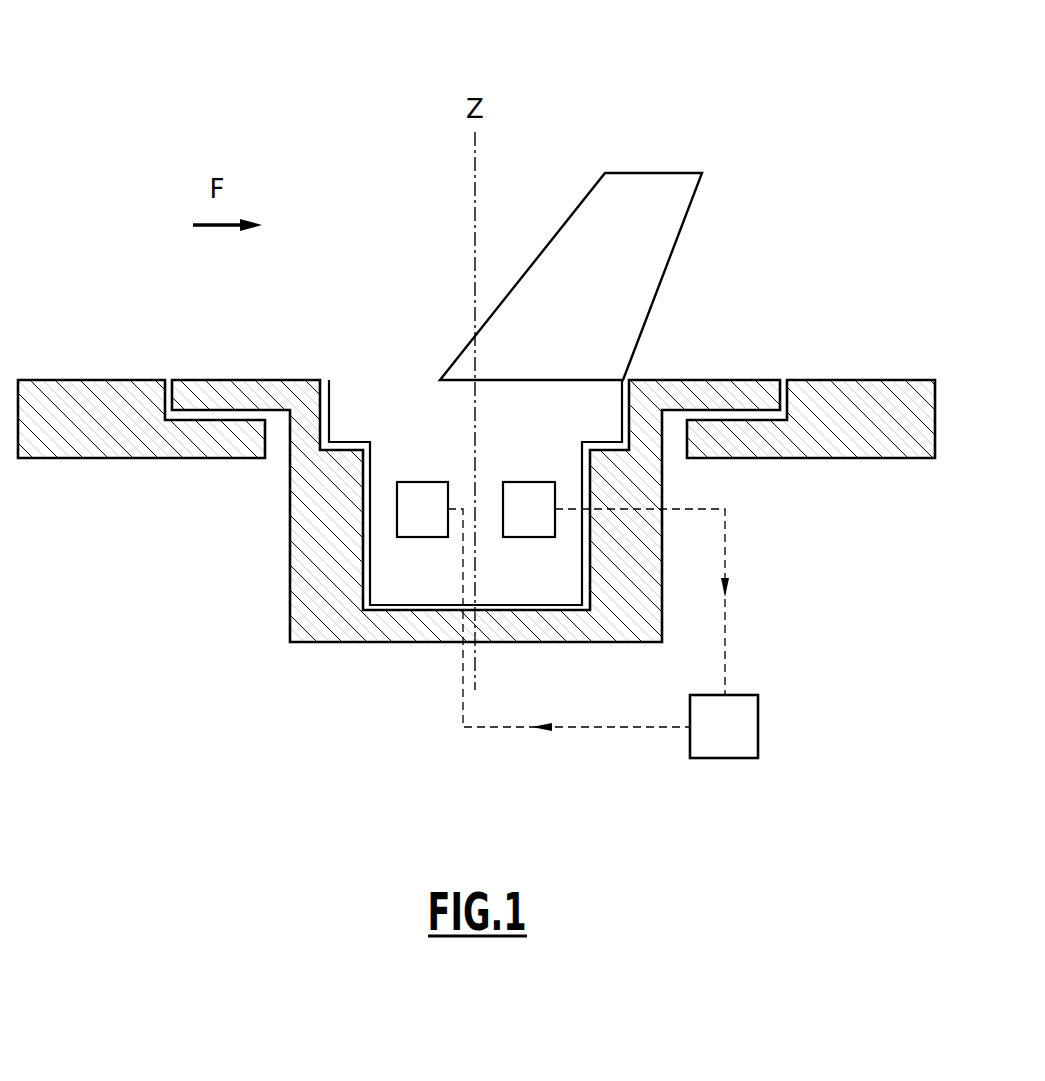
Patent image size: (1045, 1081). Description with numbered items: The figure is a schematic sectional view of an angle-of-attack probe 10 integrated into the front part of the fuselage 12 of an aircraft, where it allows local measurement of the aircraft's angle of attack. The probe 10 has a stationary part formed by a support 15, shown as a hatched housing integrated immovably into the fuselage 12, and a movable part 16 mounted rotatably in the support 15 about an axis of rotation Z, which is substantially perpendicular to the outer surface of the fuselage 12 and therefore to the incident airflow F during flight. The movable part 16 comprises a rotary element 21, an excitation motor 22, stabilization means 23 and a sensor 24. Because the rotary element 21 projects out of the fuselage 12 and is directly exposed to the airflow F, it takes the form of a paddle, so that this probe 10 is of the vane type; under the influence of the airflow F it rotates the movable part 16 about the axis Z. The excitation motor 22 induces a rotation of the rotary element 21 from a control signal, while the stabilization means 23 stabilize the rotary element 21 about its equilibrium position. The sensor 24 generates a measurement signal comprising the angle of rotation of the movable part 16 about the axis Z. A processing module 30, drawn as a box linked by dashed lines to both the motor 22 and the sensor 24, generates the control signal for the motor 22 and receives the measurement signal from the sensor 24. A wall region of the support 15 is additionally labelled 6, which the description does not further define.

The angle-of-attack probe 10 is at (820, 112).
The fuselage 12 is at (88, 318).
The support 15 is at (248, 589).
The movable part 16 is at (421, 395).
The rotary element 21 is at (658, 253).
The excitation motor 22 is at (413, 517).
The stabilization means 23 is at (416, 568).
The sensor 24 is at (525, 517).
The processing module 30 is at (603, 633).
The housing wall 6 is at (650, 585).